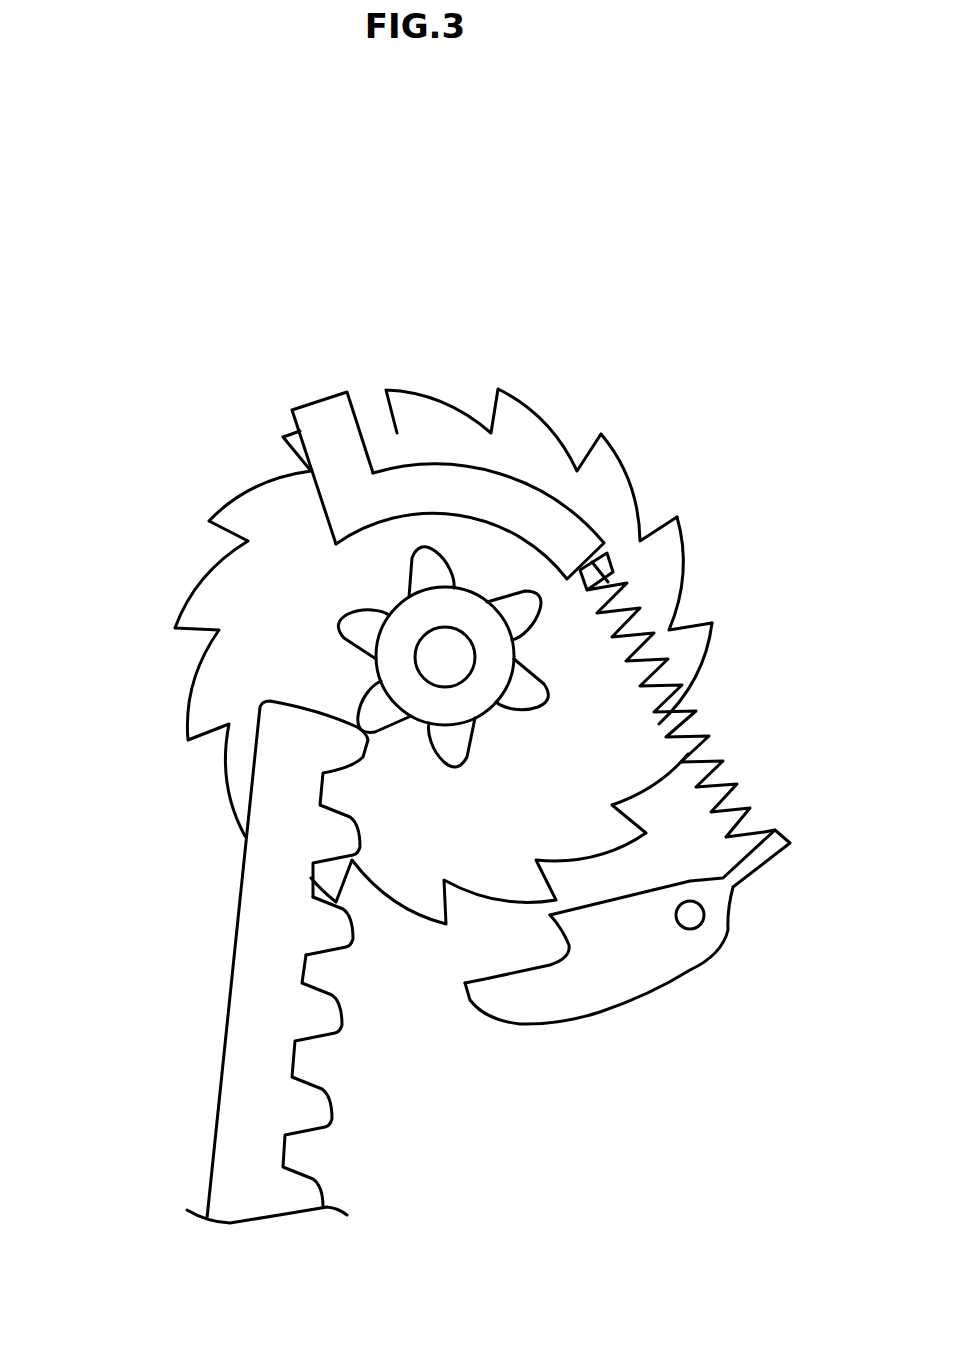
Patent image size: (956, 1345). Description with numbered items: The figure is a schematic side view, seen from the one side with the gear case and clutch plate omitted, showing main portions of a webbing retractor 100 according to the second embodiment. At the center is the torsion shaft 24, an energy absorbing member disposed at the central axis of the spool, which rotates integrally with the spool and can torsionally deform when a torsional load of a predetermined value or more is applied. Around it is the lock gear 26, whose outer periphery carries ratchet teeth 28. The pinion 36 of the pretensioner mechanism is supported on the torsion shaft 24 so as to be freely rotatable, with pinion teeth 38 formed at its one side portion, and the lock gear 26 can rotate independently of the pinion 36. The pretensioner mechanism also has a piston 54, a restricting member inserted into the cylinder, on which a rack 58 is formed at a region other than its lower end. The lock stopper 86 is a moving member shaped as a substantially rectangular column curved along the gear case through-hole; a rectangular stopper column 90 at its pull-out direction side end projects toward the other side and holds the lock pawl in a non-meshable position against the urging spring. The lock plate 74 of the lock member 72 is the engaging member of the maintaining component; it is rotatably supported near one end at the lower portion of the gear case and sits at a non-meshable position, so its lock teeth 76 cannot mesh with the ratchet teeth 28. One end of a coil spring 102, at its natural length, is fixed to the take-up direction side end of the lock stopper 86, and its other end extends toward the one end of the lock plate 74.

The webbing retractor 100 is at (109, 199).
The torsion shaft 24 is at (423, 662).
The lock gear 26 is at (518, 398).
The ratchet teeth 28 is at (682, 521).
The pinion 36 is at (493, 723).
The pinion teeth 38 is at (542, 710).
The piston 54 is at (225, 943).
The rack 58 is at (355, 930).
The lock member 72 is at (622, 811).
The lock plate 74 is at (652, 999).
The lock teeth 76 is at (480, 977).
The lock stopper 86 is at (577, 496).
The stopper column 90 is at (321, 401).
The coil spring 102 is at (737, 781).